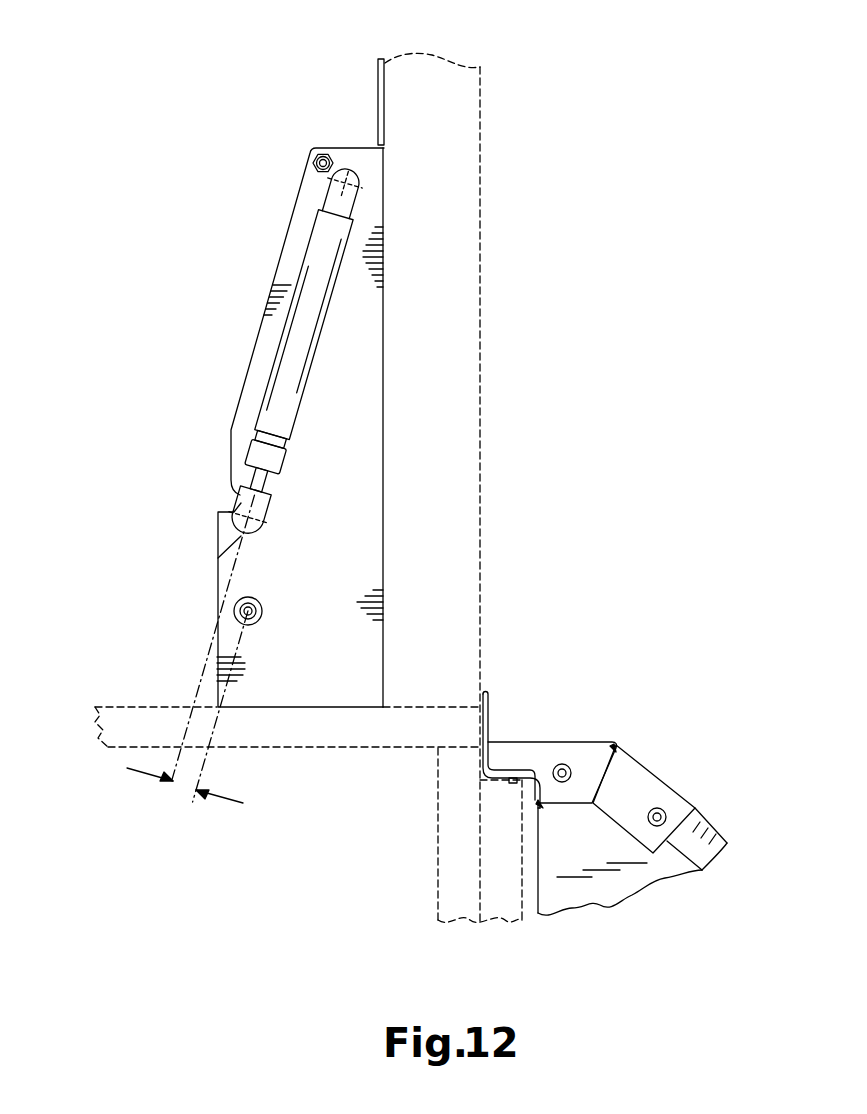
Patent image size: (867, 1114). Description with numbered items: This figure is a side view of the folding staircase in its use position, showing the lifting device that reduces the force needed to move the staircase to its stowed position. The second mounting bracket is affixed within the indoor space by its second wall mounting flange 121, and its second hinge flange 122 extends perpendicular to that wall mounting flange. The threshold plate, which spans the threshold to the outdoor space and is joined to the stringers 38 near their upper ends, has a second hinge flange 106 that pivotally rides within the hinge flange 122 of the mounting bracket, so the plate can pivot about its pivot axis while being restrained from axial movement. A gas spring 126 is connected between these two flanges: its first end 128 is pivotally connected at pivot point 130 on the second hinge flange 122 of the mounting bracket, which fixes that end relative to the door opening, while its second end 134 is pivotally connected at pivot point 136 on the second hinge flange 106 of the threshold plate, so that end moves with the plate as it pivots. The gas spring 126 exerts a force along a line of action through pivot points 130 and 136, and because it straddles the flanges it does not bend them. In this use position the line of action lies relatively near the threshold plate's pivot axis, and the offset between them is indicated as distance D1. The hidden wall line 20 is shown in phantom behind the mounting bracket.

The second wall mounting flange 121 is at (377, 70).
The wall 20 is at (378, 110).
The first end 128 is at (313, 190).
The pivot point 130 is at (345, 183).
The second hinge flange 122 is at (309, 483).
The gas spring 126 is at (280, 388).
The second end 134 is at (261, 615).
The pivot point 136 is at (248, 517).
The second hinge flange 106 is at (227, 538).
The distance of the line of action from the pivot axis D1 is at (203, 795).
The stringer 38 is at (618, 888).